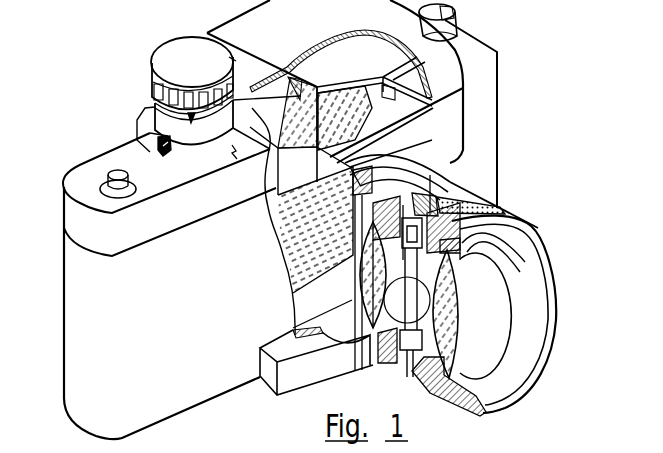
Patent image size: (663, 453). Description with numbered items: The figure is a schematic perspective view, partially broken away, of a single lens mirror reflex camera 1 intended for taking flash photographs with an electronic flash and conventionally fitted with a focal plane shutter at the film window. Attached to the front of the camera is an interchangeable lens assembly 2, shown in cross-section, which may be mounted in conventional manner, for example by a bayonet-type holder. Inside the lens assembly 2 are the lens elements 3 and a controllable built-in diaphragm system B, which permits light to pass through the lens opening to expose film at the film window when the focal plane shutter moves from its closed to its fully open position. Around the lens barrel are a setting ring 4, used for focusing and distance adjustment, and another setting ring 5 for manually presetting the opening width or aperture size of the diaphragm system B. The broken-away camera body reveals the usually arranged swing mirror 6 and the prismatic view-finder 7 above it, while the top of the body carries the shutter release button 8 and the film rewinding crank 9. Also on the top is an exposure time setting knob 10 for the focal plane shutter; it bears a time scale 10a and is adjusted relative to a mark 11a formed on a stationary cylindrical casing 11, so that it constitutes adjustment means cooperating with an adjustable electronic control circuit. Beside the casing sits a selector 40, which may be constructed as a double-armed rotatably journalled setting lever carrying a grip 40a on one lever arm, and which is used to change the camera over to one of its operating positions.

The single lens mirror reflex camera 1 is at (492, 93).
The interchangeable lens assembly 2 is at (527, 322).
The lens elements 3 is at (363, 288).
The setting ring 4 is at (523, 217).
The setting ring 5 is at (440, 178).
The swing mirror 6 is at (292, 236).
The prismatic view-finder 7 is at (336, 100).
The shutter release button 8 is at (113, 183).
The film rewinding crank 9 is at (455, 18).
The exposure time setting knob 10 is at (176, 45).
The time scale 10a is at (234, 61).
The stationary cylindrical casing 11 is at (163, 118).
The mark 11a is at (206, 126).
The selector 40 is at (160, 150).
The grip 40a is at (157, 134).
The controllable diaphragm system B is at (412, 325).